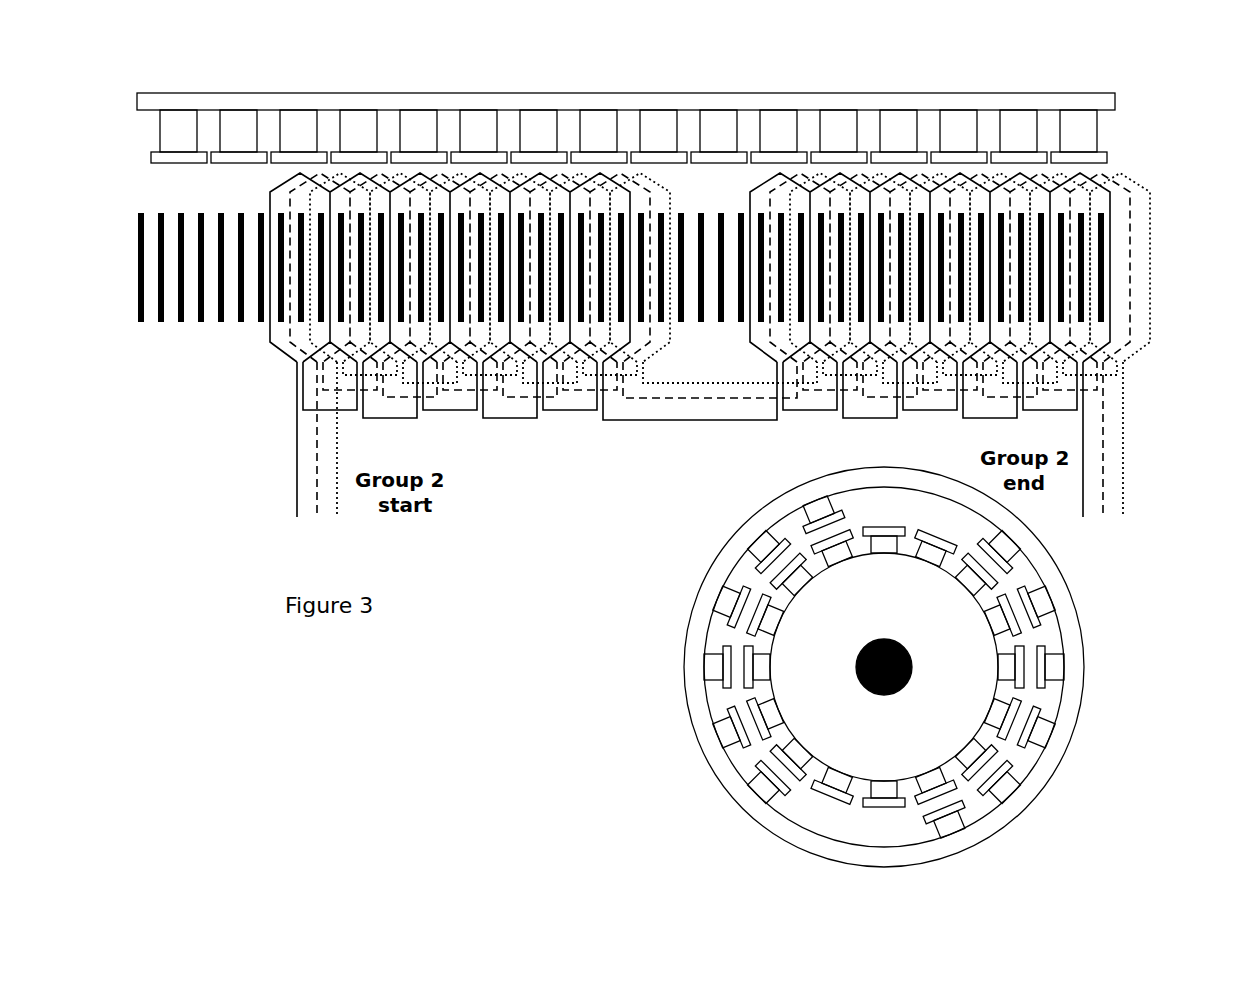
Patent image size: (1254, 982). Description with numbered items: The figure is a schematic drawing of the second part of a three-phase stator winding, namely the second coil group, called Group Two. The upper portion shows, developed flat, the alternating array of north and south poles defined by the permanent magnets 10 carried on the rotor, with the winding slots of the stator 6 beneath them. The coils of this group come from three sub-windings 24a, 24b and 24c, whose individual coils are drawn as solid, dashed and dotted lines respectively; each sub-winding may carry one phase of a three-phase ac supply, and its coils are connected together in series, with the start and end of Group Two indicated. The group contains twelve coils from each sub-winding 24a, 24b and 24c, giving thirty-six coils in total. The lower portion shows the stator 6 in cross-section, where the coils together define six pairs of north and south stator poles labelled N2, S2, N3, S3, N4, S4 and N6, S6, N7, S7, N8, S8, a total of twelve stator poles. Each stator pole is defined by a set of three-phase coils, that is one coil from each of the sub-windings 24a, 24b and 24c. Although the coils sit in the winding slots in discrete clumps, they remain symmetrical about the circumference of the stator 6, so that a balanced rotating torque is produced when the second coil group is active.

The stator 6 is at (688, 617).
The permanent magnets 10 is at (653, 118).
The sub-winding 24a is at (1112, 205).
The sub-winding 24b is at (1128, 262).
The sub-winding 24c is at (1150, 325).
The north stator pole N2 is at (1008, 543).
The south stator pole S2 is at (1046, 600).
The north stator pole N3 is at (1060, 667).
The south stator pole S3 is at (1047, 733).
The north stator pole N4 is at (1010, 790).
The south stator pole S4 is at (955, 826).
The north stator pole N6 is at (758, 792).
The south stator pole S6 is at (722, 735).
The north stator pole N7 is at (709, 668).
The south stator pole S7 is at (722, 600).
The north stator pole N8 is at (759, 547).
The south stator pole S8 is at (816, 505).